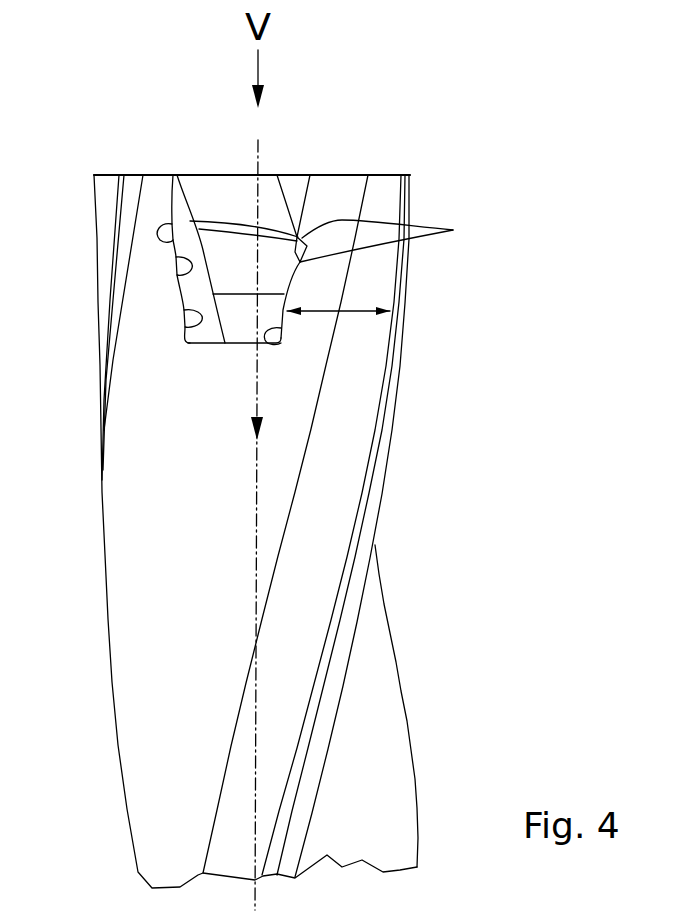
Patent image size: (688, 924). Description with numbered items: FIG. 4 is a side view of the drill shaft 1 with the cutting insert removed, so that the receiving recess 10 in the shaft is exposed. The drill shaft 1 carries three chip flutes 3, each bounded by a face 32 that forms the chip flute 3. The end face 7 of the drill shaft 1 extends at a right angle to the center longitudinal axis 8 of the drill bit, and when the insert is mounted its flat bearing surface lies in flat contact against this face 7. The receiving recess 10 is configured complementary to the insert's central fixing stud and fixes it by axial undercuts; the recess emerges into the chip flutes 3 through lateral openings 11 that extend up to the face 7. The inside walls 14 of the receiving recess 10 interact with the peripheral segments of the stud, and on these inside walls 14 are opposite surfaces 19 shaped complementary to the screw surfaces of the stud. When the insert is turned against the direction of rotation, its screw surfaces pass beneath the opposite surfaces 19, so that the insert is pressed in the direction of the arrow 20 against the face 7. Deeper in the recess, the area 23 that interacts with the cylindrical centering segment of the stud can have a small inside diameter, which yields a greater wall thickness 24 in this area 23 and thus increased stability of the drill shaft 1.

The drill shaft 1 is at (407, 652).
The chip flute 3 is at (187, 467).
The face 7 is at (345, 175).
The center longitudinal axis 8 is at (258, 483).
The receiving recess 10 is at (204, 186).
The lateral opening 11 is at (184, 320).
The inside wall 14 is at (178, 275).
The opposite surface 19 is at (158, 241).
The arrow 20 is at (258, 401).
The area 23 is at (281, 342).
The wall thickness 24 is at (353, 311).
The face 32 is at (187, 577).